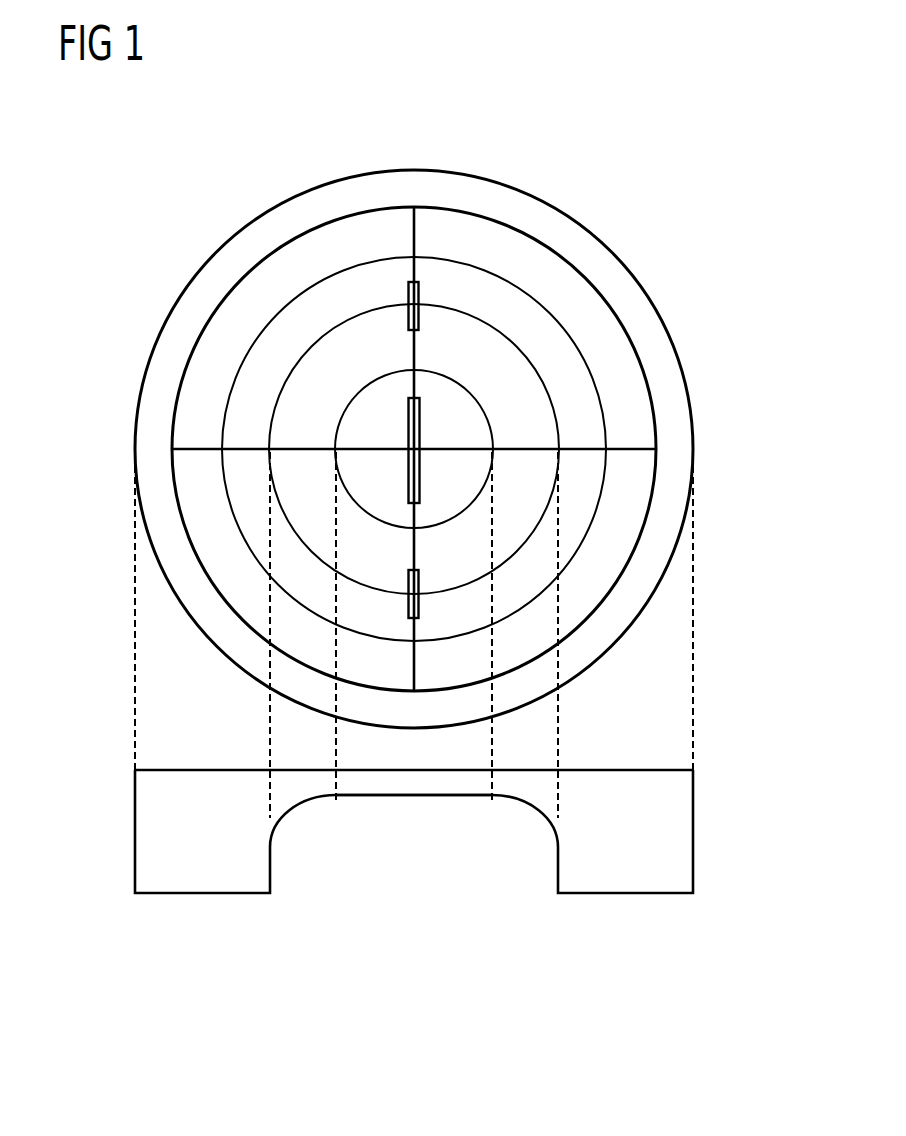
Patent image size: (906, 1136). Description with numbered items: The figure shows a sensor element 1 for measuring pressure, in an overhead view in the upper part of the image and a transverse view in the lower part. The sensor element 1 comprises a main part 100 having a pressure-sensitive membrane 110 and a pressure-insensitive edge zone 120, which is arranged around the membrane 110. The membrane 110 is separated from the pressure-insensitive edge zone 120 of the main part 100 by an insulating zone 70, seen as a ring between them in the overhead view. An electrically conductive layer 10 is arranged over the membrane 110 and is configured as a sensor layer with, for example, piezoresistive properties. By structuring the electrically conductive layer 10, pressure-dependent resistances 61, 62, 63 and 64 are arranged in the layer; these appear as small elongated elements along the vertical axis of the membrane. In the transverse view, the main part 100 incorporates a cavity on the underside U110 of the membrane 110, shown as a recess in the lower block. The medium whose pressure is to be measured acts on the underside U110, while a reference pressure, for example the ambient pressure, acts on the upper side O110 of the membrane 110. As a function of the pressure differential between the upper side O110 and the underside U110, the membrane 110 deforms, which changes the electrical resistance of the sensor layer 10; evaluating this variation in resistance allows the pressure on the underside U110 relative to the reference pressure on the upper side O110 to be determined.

The sensor element 1 is at (174, 196).
The electrically conductive layer 10 is at (463, 488).
The pressure-dependent resistance 61 is at (524, 324).
The pressure-dependent resistance 62 is at (420, 426).
The pressure-dependent resistance 63 is at (408, 296).
The pressure-dependent resistance 64 is at (420, 603).
The insulating zone 70 is at (600, 296).
The main part 100 is at (134, 444).
The membrane 110 is at (443, 277).
The pressure-insensitive edge zone 120 is at (590, 246).
The underside of the membrane U110 is at (447, 795).
The upper side of the membrane O110 is at (589, 771).